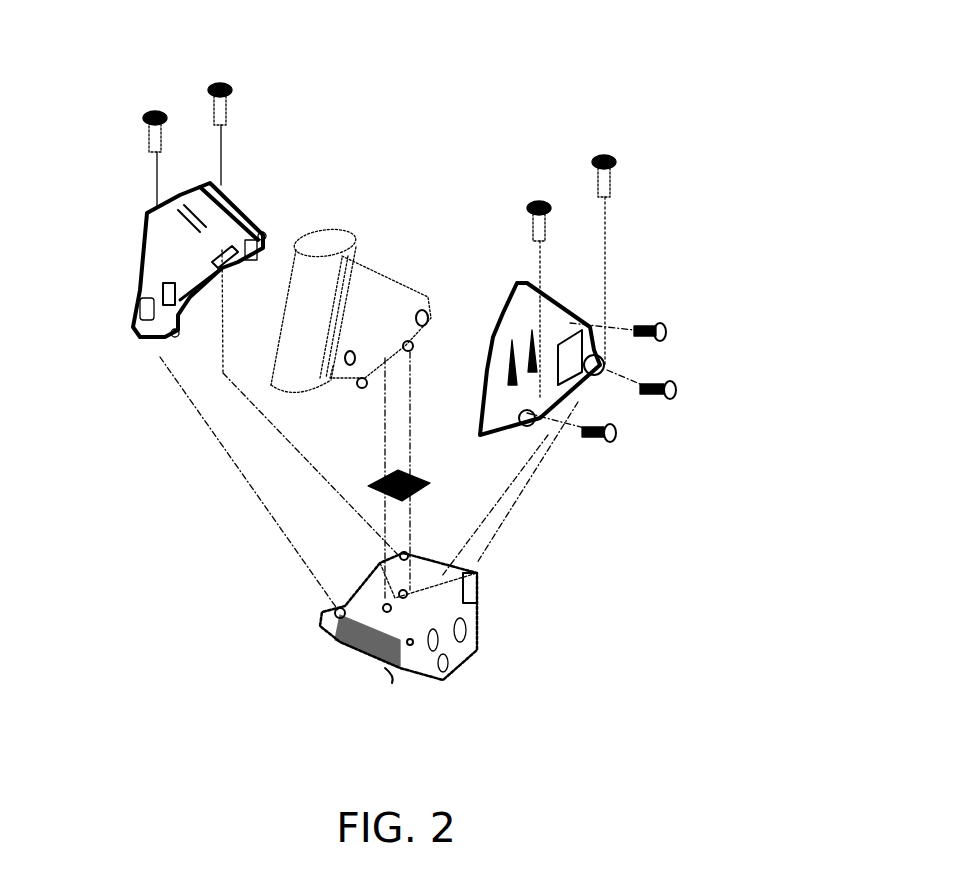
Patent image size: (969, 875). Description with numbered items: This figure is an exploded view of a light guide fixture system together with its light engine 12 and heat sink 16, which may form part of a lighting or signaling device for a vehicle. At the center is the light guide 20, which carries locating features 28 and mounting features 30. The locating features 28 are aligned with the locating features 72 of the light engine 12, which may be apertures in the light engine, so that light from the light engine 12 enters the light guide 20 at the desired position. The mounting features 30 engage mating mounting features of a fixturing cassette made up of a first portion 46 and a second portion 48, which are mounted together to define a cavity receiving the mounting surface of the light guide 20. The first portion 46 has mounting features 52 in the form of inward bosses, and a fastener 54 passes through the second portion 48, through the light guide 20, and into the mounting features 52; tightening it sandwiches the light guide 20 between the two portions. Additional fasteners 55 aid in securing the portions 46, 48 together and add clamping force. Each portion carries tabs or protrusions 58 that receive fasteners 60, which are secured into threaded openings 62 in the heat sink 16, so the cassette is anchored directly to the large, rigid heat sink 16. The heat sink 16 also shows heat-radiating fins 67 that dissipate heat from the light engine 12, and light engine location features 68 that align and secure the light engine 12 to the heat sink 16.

The light engine 12 is at (414, 493).
The heat sink 16 is at (498, 618).
The light guide 20 is at (366, 258).
The locating features 28 is at (362, 390).
The mounting features 30 is at (351, 352).
The first portion 46 is at (150, 258).
The second portion 48 is at (565, 320).
The mounting features 52 is at (258, 264).
The fastener 54 is at (680, 396).
The additional fasteners 55 is at (264, 234).
The tabs or protrusions 58 is at (606, 358).
The fastener 60 is at (153, 110).
The openings 62 is at (404, 555).
The heat-radiating fins 67 is at (438, 678).
The light engine location features 68 is at (401, 597).
The locating features 72 is at (384, 478).